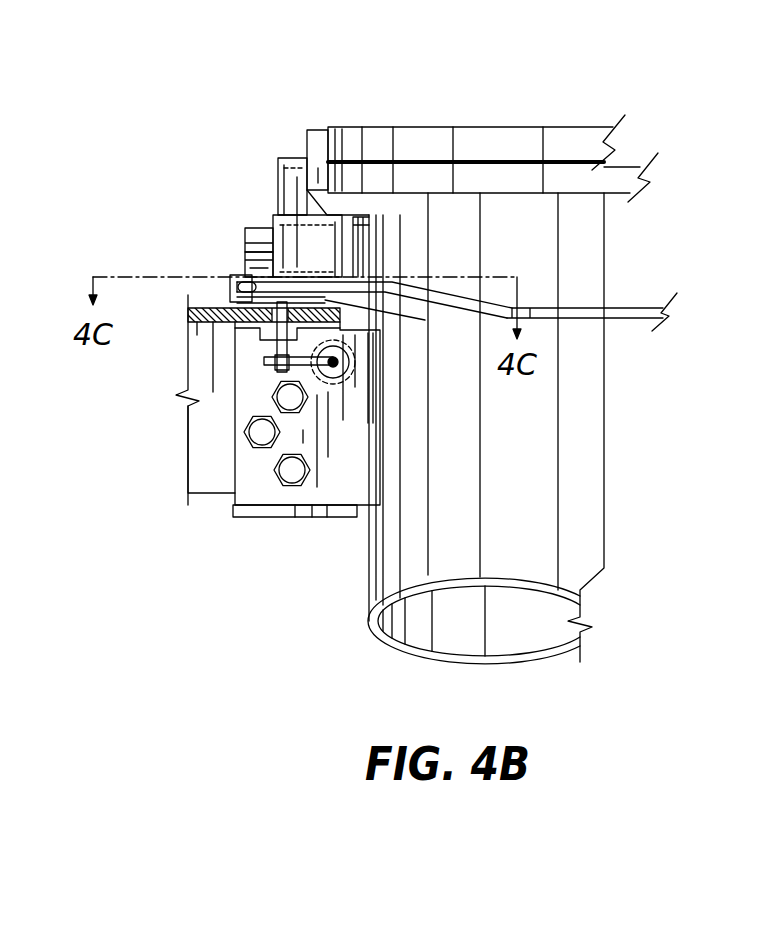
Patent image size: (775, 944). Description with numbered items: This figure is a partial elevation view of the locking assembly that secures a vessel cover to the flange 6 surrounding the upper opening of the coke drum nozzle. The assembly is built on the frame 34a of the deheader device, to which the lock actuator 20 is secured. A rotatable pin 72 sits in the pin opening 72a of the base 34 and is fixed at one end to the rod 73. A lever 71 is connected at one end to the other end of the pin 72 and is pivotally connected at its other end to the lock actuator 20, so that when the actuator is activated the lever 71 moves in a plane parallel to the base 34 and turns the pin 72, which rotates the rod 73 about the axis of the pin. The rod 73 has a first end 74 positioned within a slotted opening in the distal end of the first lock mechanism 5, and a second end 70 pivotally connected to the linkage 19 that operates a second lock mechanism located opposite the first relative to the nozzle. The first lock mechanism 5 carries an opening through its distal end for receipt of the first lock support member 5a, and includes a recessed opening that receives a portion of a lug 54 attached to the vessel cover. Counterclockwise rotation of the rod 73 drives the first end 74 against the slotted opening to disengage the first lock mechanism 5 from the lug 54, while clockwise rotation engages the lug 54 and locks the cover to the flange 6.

The flange 6 is at (630, 165).
The lug 54 is at (305, 142).
The first lock mechanism 5 is at (277, 198).
The first lock support member 5a is at (245, 243).
The pin opening 72a is at (245, 268).
The first end of the rod 74 is at (330, 300).
The linkage 19 is at (587, 316).
The second end of the rod 70 is at (230, 283).
The rod 73 is at (190, 303).
The base 34 is at (188, 312).
The frame 34a is at (185, 467).
The lever 71 is at (265, 360).
The rotatable pin 72 is at (263, 345).
The lock actuator 20 is at (352, 368).